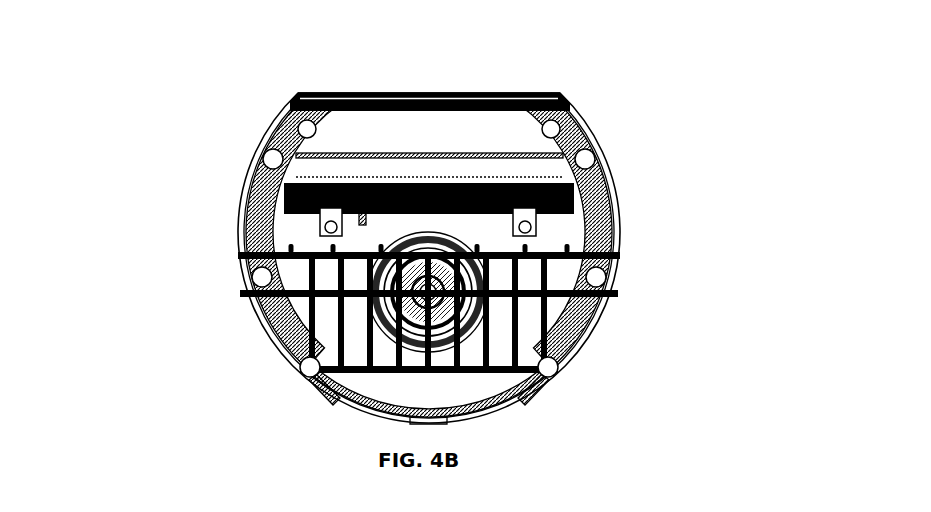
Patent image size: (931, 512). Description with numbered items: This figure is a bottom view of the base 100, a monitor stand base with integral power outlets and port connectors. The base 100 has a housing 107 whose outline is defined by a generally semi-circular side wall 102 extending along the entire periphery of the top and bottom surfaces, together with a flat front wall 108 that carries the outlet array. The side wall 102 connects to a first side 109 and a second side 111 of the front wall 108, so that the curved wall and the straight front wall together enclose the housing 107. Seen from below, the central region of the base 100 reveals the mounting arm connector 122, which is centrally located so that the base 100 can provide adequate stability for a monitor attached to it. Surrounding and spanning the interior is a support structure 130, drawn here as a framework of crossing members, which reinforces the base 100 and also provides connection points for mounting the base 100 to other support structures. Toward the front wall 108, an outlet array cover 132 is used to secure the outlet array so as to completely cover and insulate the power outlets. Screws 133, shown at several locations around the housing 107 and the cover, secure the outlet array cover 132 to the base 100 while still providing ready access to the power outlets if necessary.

The base 100 is at (208, 122).
The side wall 102 is at (617, 207).
The housing 107 is at (446, 66).
The front wall 108 is at (508, 92).
The first side 109 is at (553, 93).
The second side 111 is at (304, 98).
The mounting arm connector 122 is at (418, 300).
The support structure 130 is at (587, 347).
The outlet array cover 132 is at (302, 170).
The screws 133 is at (295, 100).